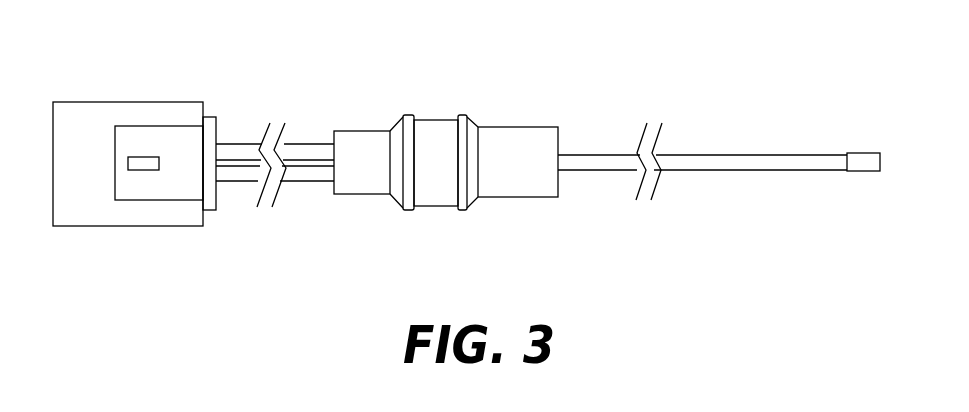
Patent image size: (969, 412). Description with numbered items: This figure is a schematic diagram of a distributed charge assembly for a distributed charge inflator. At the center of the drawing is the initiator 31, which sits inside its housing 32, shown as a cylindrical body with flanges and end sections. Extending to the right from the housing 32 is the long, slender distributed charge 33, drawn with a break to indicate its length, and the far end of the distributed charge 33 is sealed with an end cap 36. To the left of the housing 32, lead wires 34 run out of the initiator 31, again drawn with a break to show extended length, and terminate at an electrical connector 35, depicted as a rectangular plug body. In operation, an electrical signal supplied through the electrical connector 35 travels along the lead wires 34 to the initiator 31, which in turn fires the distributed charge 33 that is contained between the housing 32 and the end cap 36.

The initiator 31 is at (440, 120).
The housing 32 is at (473, 200).
The distributed charge 33 is at (780, 152).
The lead wires 34 is at (248, 142).
The electrical connector 35 is at (122, 226).
The end cap 36 is at (865, 152).